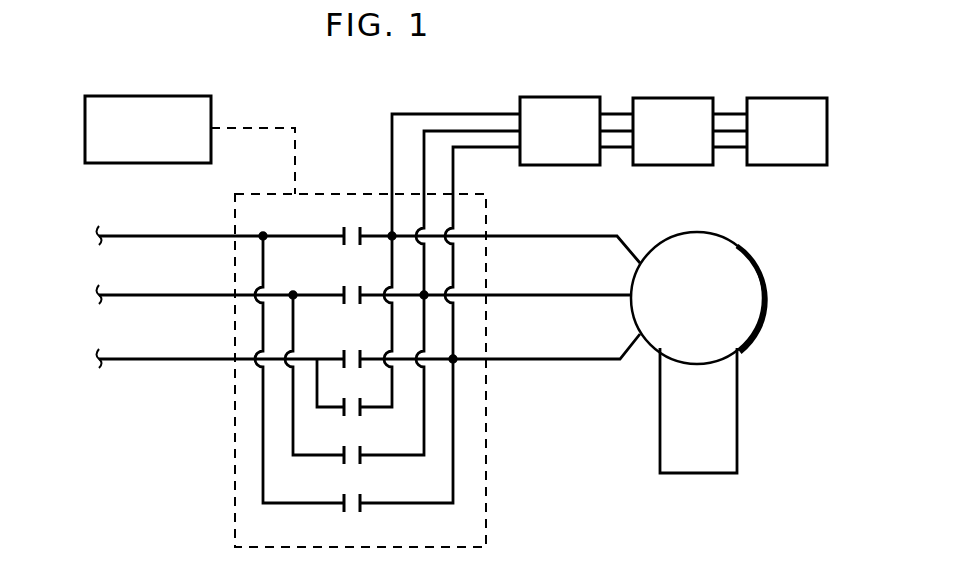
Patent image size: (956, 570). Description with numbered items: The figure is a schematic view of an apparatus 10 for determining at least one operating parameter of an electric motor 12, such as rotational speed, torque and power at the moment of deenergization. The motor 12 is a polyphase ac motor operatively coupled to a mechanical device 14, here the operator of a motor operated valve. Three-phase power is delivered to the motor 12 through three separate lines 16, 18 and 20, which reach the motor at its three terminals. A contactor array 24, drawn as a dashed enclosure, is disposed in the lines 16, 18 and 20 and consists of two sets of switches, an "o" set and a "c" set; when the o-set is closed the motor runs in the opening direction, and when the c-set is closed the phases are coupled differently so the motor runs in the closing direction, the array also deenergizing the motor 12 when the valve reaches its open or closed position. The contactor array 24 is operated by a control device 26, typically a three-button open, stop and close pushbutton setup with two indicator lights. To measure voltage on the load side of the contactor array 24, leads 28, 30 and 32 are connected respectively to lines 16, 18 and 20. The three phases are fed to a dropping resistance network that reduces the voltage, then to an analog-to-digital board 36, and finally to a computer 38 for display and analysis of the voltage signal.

The apparatus 10 is at (674, 129).
The electric motor 12 is at (765, 304).
The mechanical device 14 is at (745, 413).
The line 16 is at (128, 233).
The line 18 is at (128, 293).
The line 20 is at (128, 357).
The contactor array 24 is at (489, 477).
The control device 26 is at (211, 110).
The lead 28 is at (392, 158).
The lead 30 is at (476, 131).
The lead 32 is at (453, 178).
The analog-to-digital board 36 is at (698, 97).
The computer 38 is at (812, 97).